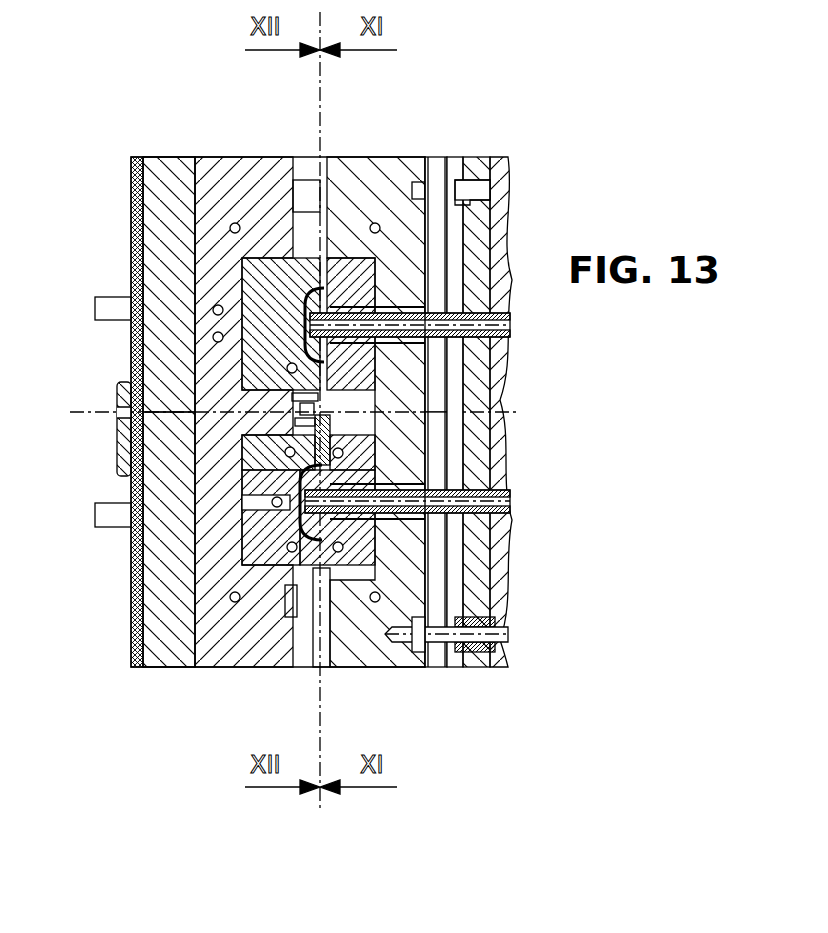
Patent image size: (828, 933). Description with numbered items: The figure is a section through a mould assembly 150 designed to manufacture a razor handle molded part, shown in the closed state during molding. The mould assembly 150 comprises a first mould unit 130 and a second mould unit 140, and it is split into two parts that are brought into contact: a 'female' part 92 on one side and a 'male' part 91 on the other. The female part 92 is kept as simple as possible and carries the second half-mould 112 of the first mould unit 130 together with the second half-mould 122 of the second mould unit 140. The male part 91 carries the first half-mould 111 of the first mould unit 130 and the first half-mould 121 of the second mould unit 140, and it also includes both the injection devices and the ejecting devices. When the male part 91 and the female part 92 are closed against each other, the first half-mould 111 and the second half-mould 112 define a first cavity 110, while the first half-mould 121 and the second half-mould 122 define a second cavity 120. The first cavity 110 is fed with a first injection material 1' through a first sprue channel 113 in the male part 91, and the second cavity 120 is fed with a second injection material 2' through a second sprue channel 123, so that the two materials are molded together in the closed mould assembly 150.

The female part 92 is at (266, 152).
The male part 91 is at (399, 152).
The first half-mould of the second mould unit 121 is at (337, 262).
The second half-mould of the second mould unit 122 is at (313, 322).
The second sprue channel 123 is at (432, 300).
The second cavity 120 is at (317, 325).
The second mould unit 140 is at (226, 298).
The first mould unit 130 is at (238, 505).
The first cavity 110 is at (293, 523).
The second half-mould of the first mould unit 112 is at (267, 552).
The first half-mould of the first mould unit 111 is at (352, 553).
The first sprue channel 113 is at (432, 505).
The second injection material 2' is at (439, 332).
The mould assembly 150 is at (535, 490).
The first injection material 1' is at (438, 517).